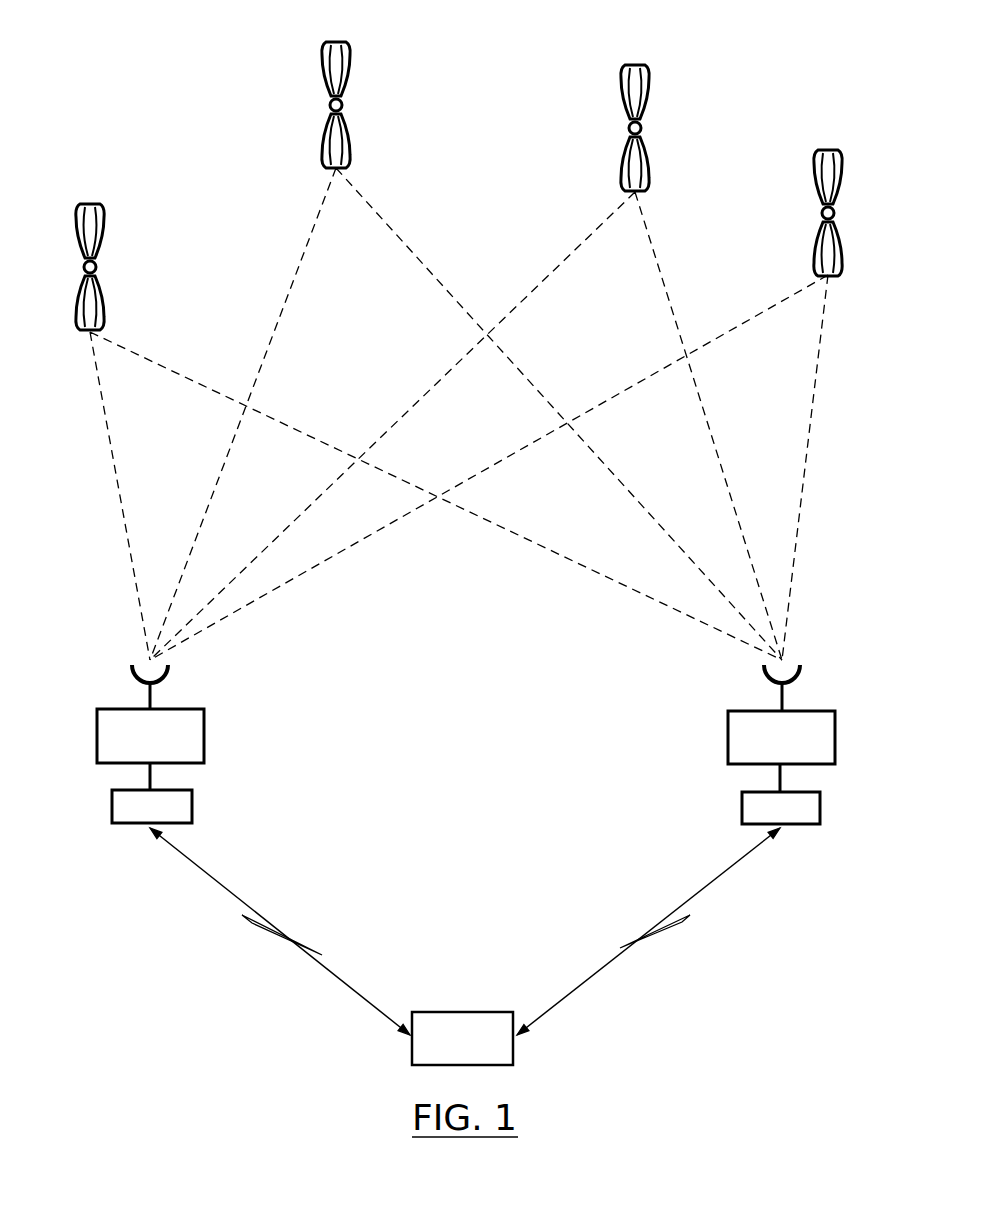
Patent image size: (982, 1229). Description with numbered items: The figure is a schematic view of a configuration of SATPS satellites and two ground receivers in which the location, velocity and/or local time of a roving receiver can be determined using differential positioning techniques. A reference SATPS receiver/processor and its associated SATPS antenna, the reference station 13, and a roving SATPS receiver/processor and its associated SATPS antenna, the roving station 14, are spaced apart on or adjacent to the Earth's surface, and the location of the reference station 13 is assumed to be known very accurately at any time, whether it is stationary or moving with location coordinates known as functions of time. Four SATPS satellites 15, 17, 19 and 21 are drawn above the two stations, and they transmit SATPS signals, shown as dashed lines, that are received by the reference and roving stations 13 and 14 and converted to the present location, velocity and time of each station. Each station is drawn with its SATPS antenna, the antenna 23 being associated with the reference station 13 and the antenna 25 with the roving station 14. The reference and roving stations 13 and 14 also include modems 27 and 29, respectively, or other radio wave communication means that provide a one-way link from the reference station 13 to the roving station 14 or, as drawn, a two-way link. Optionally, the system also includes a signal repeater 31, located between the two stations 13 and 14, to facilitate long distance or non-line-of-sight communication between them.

The reference station 13 is at (825, 740).
The roving station 14 is at (113, 740).
The SATPS satellite 15 is at (92, 202).
The SATPS satellite 17 is at (345, 43).
The SATPS satellite 19 is at (636, 65).
The SATPS satellite 21 is at (827, 148).
The reference receiver antenna 23 is at (787, 696).
The roving receiver antenna 25 is at (150, 694).
The modem 27 is at (820, 811).
The modem 29 is at (117, 805).
The signal repeater 31 is at (468, 1022).